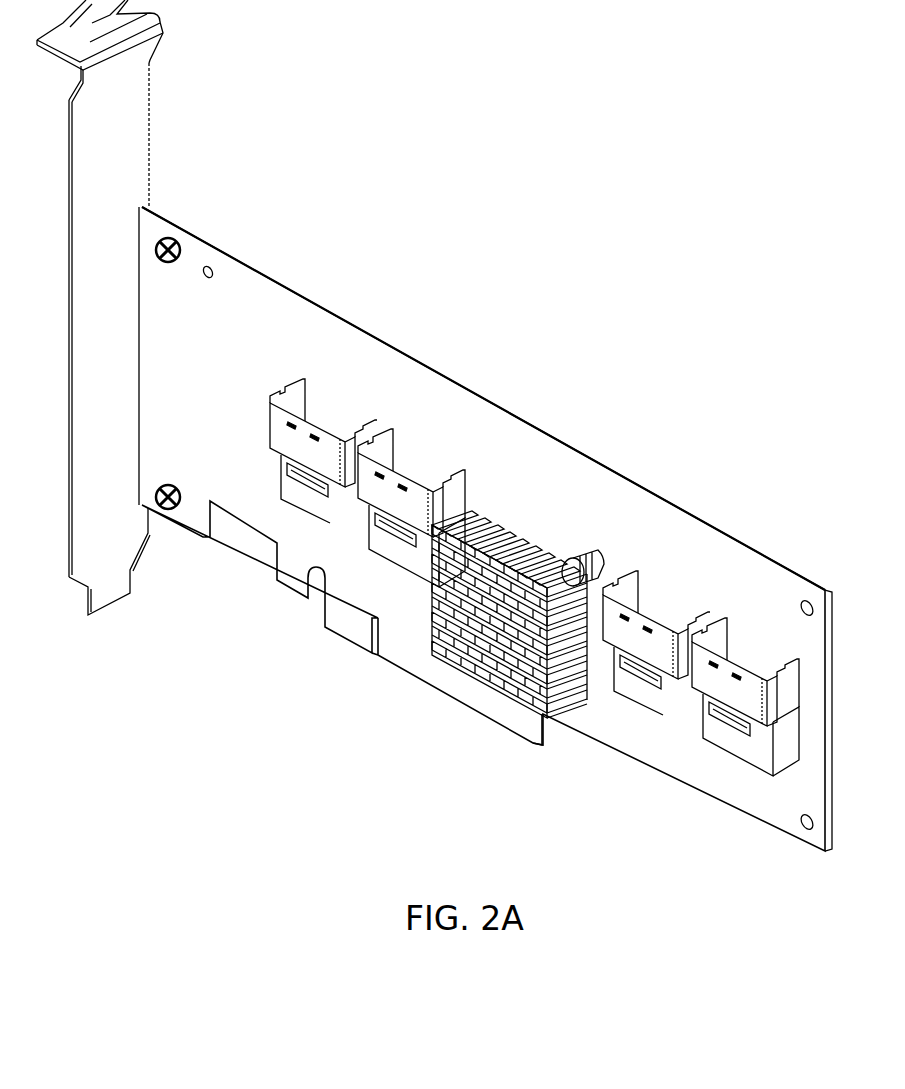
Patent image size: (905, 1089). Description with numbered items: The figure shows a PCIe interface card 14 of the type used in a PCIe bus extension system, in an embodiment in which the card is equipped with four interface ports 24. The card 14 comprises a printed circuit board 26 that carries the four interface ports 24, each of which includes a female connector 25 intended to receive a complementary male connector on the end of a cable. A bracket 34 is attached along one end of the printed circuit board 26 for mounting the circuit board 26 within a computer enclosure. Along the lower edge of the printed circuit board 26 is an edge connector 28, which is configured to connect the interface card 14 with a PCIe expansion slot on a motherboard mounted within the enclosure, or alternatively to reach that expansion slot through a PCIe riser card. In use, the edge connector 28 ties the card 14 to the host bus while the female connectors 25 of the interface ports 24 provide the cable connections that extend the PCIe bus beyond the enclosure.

The interface card 14 is at (434, 425).
The interface port 24 is at (412, 460).
The female connector 25 is at (375, 535).
The printed circuit board 26 is at (591, 468).
The edge connector 28 is at (440, 690).
The bracket 34 is at (135, 146).